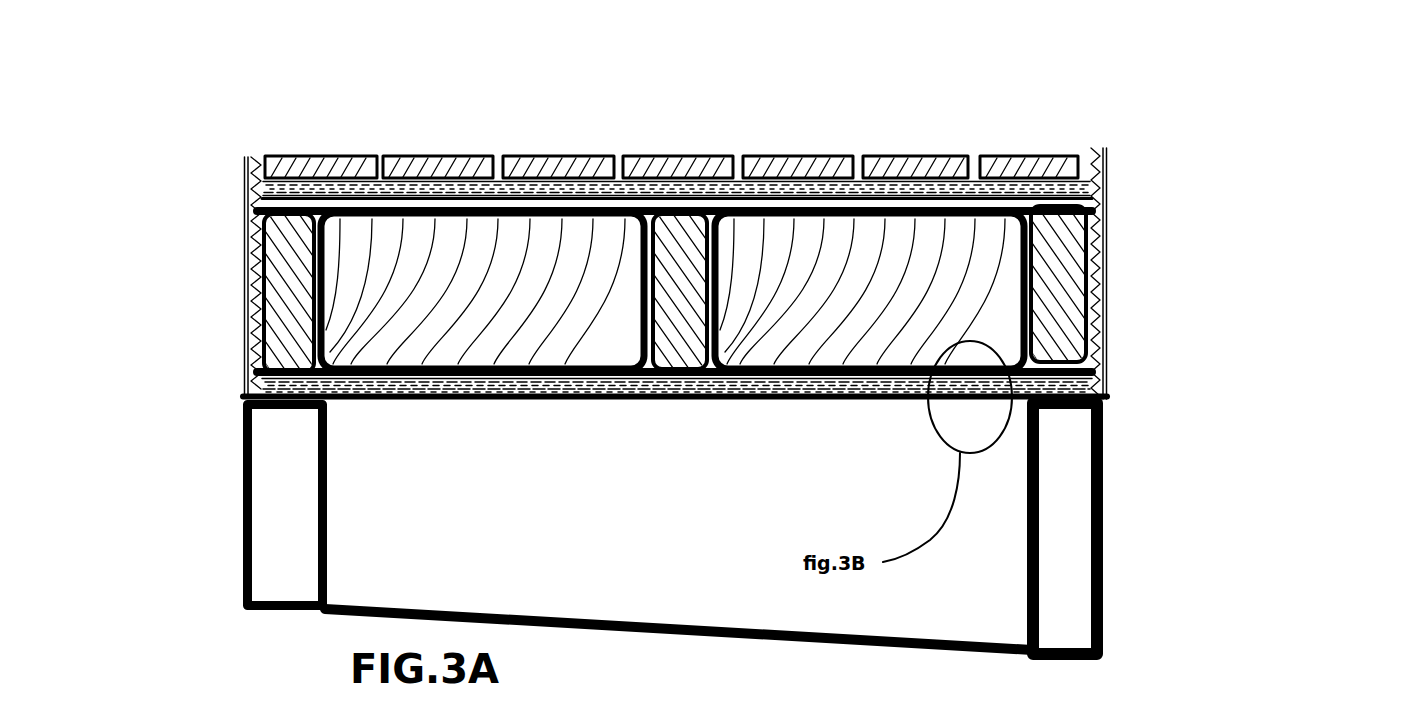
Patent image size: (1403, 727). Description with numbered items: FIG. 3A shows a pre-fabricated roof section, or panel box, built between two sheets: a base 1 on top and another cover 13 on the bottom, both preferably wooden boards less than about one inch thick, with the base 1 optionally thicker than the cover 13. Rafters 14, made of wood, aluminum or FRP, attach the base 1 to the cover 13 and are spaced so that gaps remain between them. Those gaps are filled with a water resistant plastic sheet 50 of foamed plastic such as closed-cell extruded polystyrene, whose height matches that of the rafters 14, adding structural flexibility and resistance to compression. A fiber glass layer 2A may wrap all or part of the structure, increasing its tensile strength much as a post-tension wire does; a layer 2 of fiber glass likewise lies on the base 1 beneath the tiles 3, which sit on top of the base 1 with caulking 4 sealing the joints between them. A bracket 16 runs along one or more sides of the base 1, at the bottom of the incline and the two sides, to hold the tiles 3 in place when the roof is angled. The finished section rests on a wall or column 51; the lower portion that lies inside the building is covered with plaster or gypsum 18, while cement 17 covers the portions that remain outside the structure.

The base 1 is at (1103, 193).
The panel layer 2 is at (1107, 163).
The fiber glass layer 2A is at (243, 287).
The tiles 3 is at (567, 165).
The caulking 4 is at (857, 163).
The cover 13 is at (1100, 402).
The rafters 14 is at (280, 302).
The bracket 16 is at (257, 163).
The cement 17 is at (243, 257).
The plaster/gypsum 18 is at (353, 403).
The plastic sheet 50 is at (430, 350).
The wall or column 51 is at (243, 480).